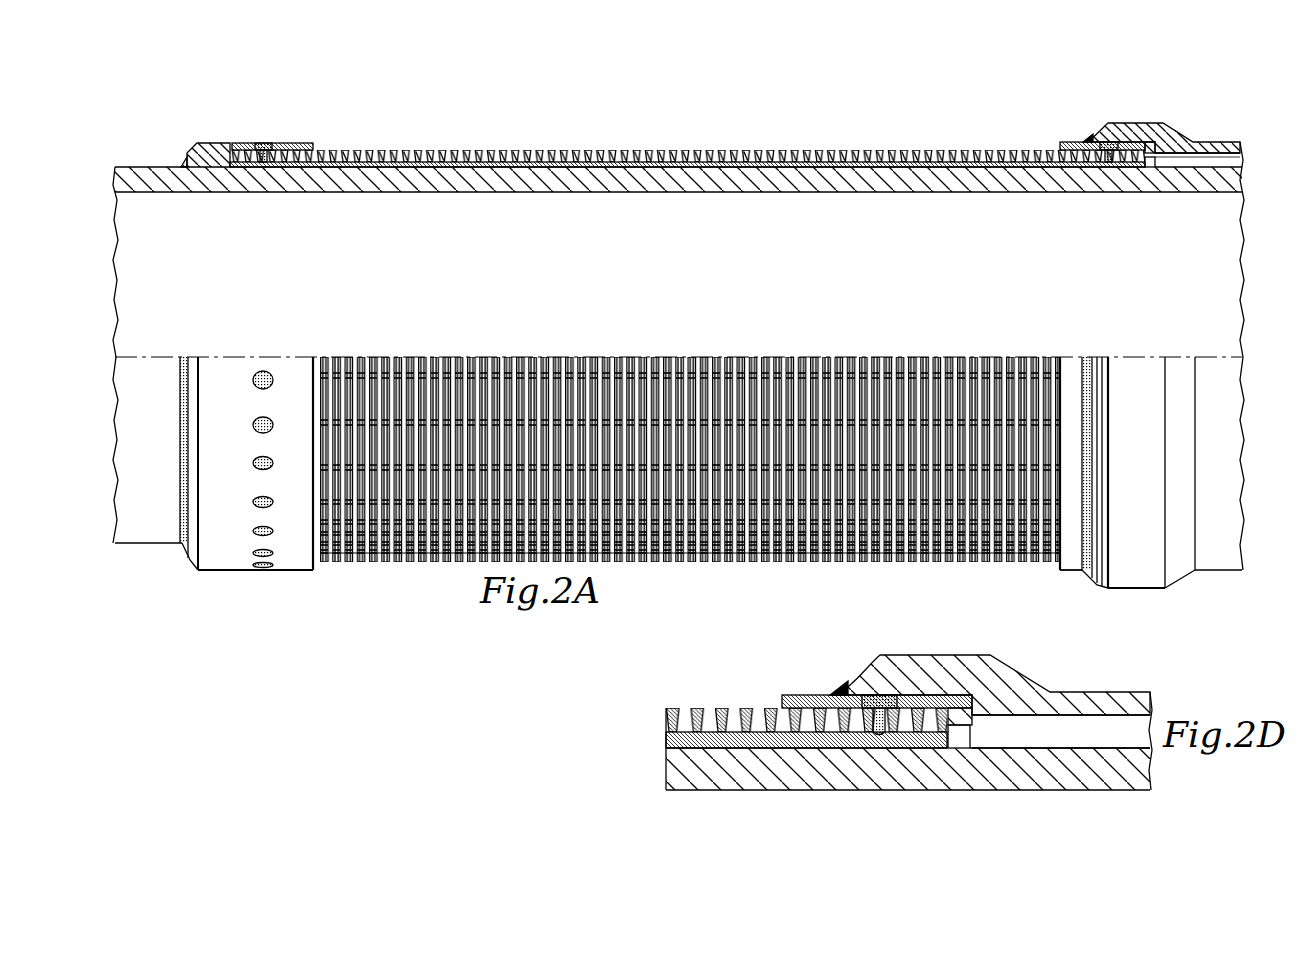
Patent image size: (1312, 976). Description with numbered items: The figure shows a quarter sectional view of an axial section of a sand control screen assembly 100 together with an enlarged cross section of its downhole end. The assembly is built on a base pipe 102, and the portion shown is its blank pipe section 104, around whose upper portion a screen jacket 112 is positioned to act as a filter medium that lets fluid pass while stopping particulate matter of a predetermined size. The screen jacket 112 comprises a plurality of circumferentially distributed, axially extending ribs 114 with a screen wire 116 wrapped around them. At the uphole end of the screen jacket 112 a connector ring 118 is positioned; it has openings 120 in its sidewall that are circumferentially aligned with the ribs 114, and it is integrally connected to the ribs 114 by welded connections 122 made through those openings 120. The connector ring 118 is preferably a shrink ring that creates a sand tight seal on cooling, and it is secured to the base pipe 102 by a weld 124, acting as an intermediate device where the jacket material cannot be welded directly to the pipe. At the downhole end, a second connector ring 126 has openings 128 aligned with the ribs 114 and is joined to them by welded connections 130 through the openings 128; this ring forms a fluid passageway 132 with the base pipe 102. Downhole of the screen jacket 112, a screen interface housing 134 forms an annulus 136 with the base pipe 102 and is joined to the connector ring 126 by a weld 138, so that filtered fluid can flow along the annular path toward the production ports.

In FIG. 2A, the sand control screen assembly 100 is at (972, 113).
In FIG. 2A, the base pipe 102 is at (290, 186).
In FIG. 2D, the base pipe 102 is at (680, 776).
In FIG. 2A, the blank pipe section 104 is at (1055, 186).
In FIG. 2A, the screen jacket 112 is at (655, 148).
In FIG. 2A, the ribs 114 is at (748, 164).
In FIG. 2D, the ribs 114 is at (735, 740).
In FIG. 2A, the screen wire 116 is at (815, 149).
In FIG. 2D, the screen wire 116 is at (691, 718).
In FIG. 2A, the connector ring 118 is at (212, 150).
In FIG. 2A, the openings 120 is at (288, 146).
In FIG. 2A, the welded connections 122 is at (263, 145).
In FIG. 2A, the weld 124 is at (184, 161).
In FIG. 2A, the connector ring 126 is at (1068, 145).
In FIG. 2D, the connector ring 126 is at (797, 700).
In FIG. 2A, the openings 128 is at (1126, 150).
In FIG. 2D, the openings 128 is at (952, 716).
In FIG. 2A, the welded connections 130 is at (1106, 148).
In FIG. 2D, the welded connections 130 is at (879, 702).
In FIG. 2A, the fluid passageway 132 is at (1160, 163).
In FIG. 2D, the fluid passageway 132 is at (962, 737).
In FIG. 2A, the screen interface housing 134 is at (1152, 134).
In FIG. 2D, the screen interface housing 134 is at (958, 674).
In FIG. 2A, the annulus 136 is at (1233, 157).
In FIG. 2D, the annulus 136 is at (1086, 725).
In FIG. 2A, the weld 138 is at (1086, 140).
In FIG. 2D, the weld 138 is at (835, 690).